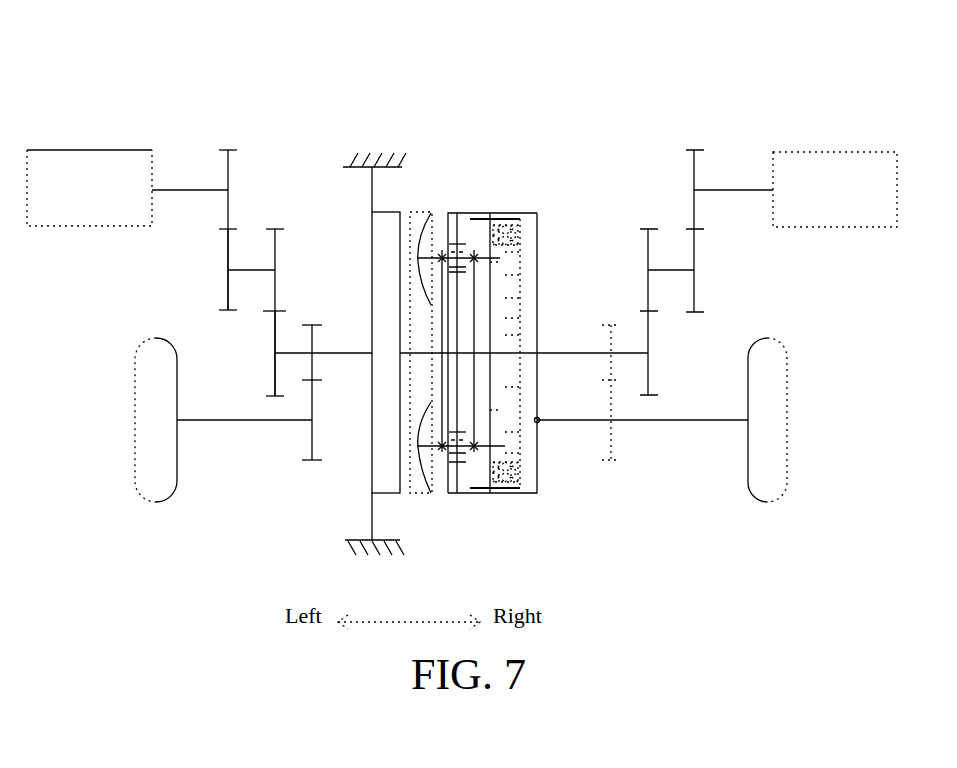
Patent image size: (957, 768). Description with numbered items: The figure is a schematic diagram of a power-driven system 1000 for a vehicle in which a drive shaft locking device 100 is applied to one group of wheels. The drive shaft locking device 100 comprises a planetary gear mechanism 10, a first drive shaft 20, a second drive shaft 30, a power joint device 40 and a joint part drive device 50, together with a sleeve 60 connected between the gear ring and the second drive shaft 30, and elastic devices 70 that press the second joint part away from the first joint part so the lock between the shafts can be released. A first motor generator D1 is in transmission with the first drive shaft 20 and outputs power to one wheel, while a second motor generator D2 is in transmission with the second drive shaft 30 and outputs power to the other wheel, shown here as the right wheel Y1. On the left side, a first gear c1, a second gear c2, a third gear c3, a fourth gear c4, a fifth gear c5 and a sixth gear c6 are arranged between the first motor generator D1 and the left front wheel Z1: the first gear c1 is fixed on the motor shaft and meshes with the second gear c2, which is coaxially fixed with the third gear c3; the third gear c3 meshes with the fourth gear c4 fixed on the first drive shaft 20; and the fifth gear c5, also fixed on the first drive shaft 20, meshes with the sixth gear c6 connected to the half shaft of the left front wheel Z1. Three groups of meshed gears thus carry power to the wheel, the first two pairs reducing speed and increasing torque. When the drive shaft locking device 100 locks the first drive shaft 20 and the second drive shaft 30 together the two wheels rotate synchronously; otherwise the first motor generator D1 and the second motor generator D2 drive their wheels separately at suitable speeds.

The power-driven system 1000 is at (477, 85).
The planetary gear mechanism 10 is at (457, 493).
The first drive shaft 20 is at (338, 352).
The second drive shaft 30 is at (577, 352).
The power joint device 40 is at (520, 470).
The joint part drive device 50 is at (385, 212).
The sleeve 60 is at (522, 213).
The elastic devices 70 is at (518, 238).
The drive shaft locking device 100 is at (505, 197).
The first gear c1 is at (230, 212).
The second gear c2 is at (226, 286).
The third gear c3 is at (272, 300).
The fourth gear c4 is at (272, 365).
The fifth gear c5 is at (313, 366).
The sixth gear c6 is at (313, 430).
The first motor generator D1 is at (118, 182).
The second motor generator D2 is at (835, 175).
The left front wheel Z1 is at (147, 450).
The right wheel Y1 is at (777, 452).